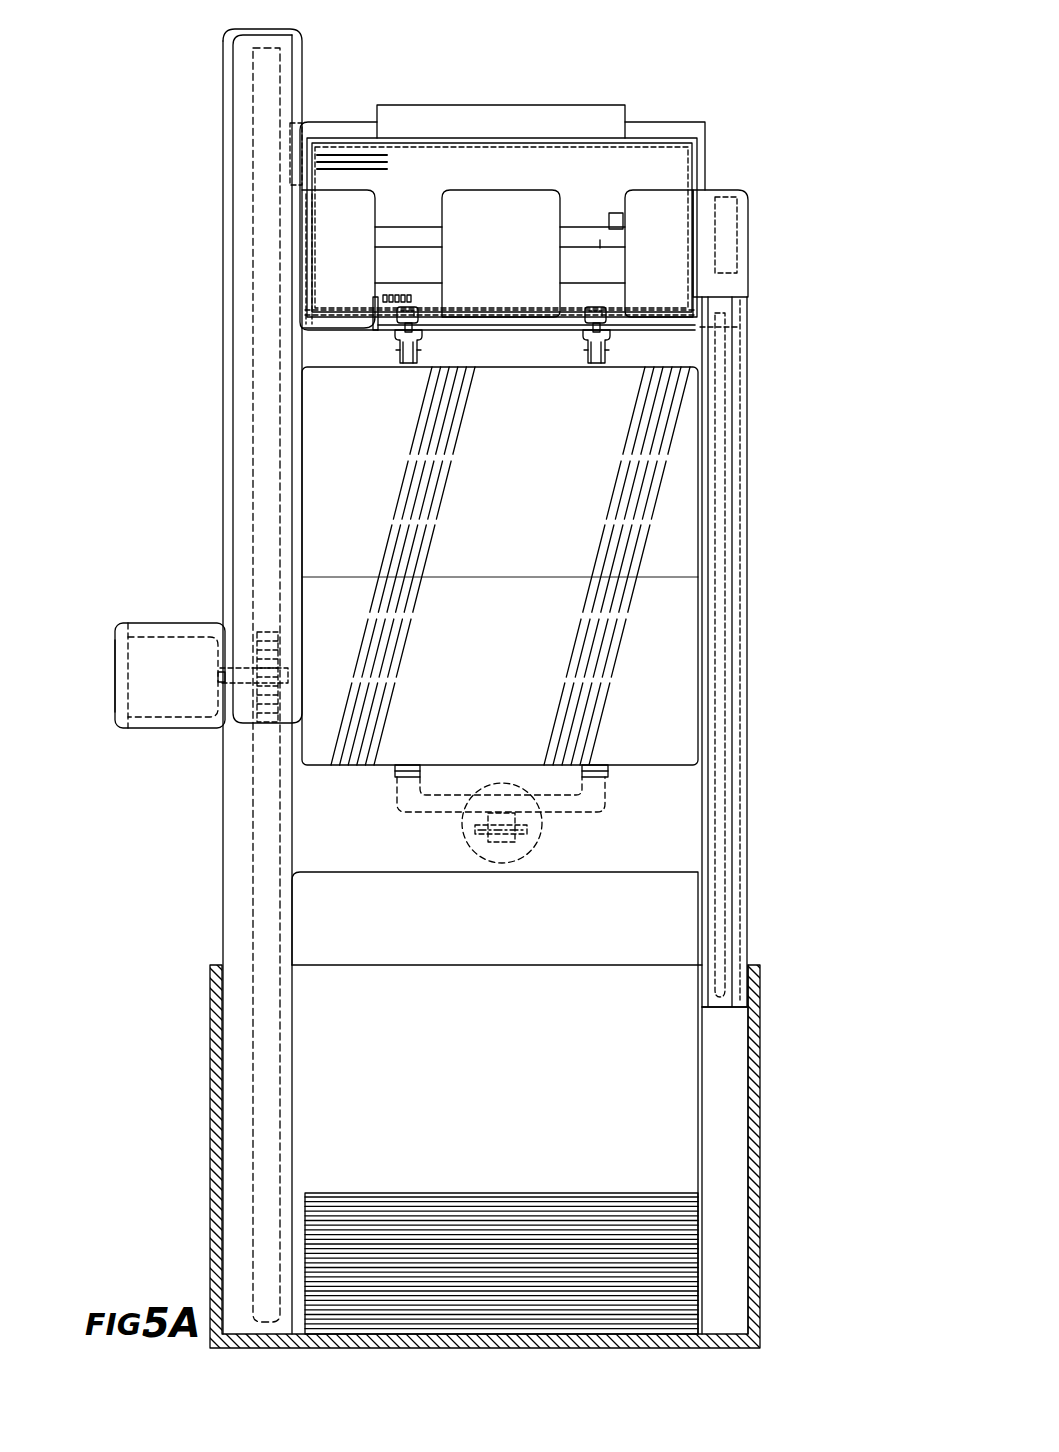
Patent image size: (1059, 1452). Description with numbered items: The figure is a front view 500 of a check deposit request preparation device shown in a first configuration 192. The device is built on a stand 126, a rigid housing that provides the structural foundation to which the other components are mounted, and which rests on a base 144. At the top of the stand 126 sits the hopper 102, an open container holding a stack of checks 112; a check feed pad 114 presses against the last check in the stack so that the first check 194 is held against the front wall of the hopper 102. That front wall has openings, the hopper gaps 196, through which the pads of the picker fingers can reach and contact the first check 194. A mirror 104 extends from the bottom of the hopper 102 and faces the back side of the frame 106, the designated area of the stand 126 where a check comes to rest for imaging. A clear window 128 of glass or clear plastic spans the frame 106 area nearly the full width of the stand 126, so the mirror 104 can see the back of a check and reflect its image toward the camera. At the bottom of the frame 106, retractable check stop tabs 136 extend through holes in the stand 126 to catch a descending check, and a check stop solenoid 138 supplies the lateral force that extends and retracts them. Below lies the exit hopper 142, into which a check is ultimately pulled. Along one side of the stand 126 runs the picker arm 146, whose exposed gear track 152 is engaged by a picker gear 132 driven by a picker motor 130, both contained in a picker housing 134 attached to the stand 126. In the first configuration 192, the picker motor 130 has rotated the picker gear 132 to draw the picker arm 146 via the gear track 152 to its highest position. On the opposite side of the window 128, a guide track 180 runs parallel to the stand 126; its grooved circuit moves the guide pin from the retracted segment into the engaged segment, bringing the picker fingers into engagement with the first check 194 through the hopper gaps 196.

The front view 500 is at (754, 48).
The hopper 102 is at (665, 213).
The mirror 104 is at (560, 497).
The frame 106 is at (680, 640).
The checks 112 is at (665, 1255).
The check feed pad 114 is at (447, 118).
The stand 126 is at (238, 805).
The clear window 128 is at (680, 435).
The picker motor 130 is at (158, 652).
The picker gear 132 is at (268, 630).
The picker housing 134 is at (125, 665).
The check stop tabs 136 is at (408, 766).
The check stop solenoid 138 is at (540, 835).
The exit hopper 142 is at (755, 1130).
The base 144 is at (700, 1340).
The picker arm 146 is at (244, 45).
The gear track 152 is at (265, 478).
The guide track 180 is at (735, 553).
The first configuration 192 is at (214, 187).
The first check 194 is at (600, 158).
The hopper gaps 196 is at (590, 207).